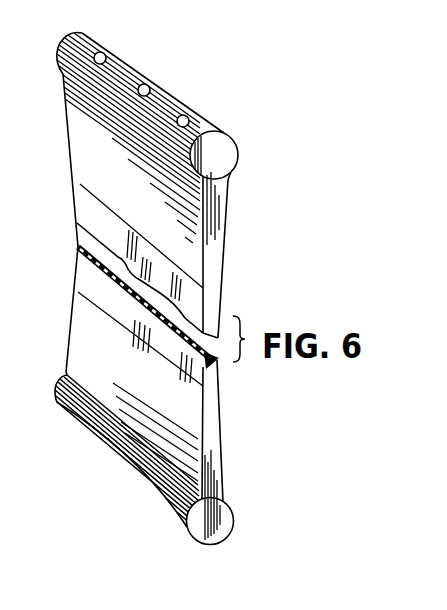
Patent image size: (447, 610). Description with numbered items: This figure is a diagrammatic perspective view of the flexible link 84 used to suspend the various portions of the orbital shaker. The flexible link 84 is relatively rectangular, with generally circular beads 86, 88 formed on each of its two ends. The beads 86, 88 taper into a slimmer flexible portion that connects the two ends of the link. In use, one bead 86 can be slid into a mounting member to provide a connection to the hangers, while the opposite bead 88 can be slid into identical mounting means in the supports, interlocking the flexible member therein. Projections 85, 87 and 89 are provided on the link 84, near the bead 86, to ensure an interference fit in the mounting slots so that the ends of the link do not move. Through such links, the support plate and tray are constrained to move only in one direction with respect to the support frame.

The flexible link 84 is at (236, 278).
The projection 85 is at (105, 54).
The bead 86 is at (237, 163).
The projection 87 is at (149, 86).
The bead 88 is at (234, 525).
The projection 89 is at (188, 117).